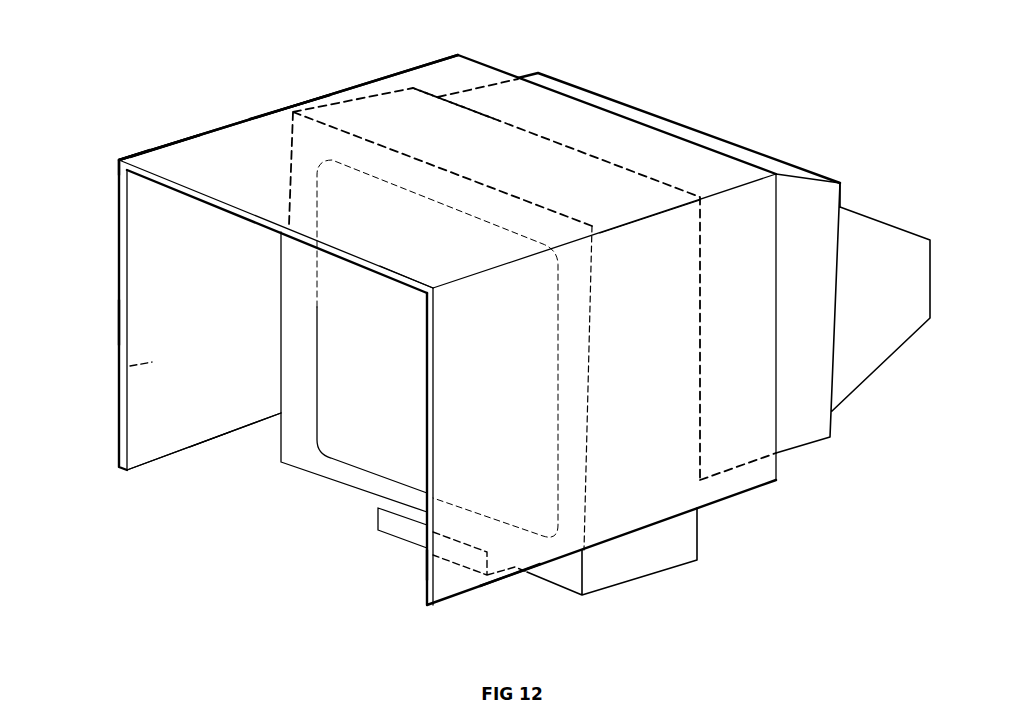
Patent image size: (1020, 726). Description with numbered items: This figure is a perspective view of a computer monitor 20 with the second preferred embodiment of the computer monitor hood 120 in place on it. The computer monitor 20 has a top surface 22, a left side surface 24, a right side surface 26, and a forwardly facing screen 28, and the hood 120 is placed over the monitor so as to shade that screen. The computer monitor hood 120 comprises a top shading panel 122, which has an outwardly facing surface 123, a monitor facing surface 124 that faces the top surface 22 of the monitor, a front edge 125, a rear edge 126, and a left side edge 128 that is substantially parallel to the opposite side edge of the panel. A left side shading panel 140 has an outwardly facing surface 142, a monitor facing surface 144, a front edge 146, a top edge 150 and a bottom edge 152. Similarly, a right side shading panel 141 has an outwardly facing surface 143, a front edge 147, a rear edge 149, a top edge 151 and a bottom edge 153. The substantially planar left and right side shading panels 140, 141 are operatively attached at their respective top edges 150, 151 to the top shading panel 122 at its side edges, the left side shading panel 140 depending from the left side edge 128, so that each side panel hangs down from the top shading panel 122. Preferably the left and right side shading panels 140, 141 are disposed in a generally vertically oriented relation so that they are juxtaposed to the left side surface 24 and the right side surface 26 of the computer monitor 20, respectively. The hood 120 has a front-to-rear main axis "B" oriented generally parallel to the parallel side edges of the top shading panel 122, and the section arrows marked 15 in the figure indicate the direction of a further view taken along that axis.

The section line B-B / view arrows 15 is at (713, 80).
The computer monitor 20 is at (300, 563).
The top surface 22 is at (372, 117).
The left side surface 24 is at (318, 308).
The right side surface 26 is at (667, 555).
The forwardly facing screen 28 is at (371, 367).
The computer monitor hood 120 is at (228, 129).
The top shading panel 122 is at (155, 158).
The outwardly facing surface 123 is at (384, 227).
The monitor facing surface 124 is at (228, 187).
The front edge 125 is at (418, 283).
The rear edge 126 is at (488, 64).
The left side edge 128 is at (290, 110).
The left side shading panel 140 is at (147, 443).
The right side shading panel 141 is at (449, 588).
The outwardly facing surface 142 is at (121, 372).
The outwardly facing surface 143 is at (506, 415).
The monitor facing surface 144 is at (171, 335).
The front edge 146 is at (118, 322).
The front edge 147 is at (427, 563).
The rear edge 149 is at (780, 463).
The top edge 150 is at (118, 157).
The top edge 151 is at (602, 230).
The bottom edge 152 is at (208, 440).
The bottom edge 153 is at (507, 580).